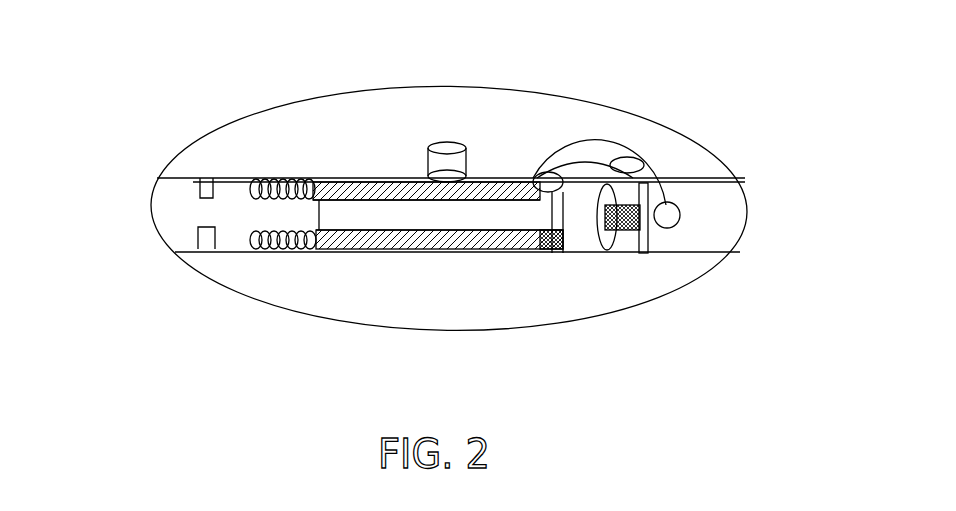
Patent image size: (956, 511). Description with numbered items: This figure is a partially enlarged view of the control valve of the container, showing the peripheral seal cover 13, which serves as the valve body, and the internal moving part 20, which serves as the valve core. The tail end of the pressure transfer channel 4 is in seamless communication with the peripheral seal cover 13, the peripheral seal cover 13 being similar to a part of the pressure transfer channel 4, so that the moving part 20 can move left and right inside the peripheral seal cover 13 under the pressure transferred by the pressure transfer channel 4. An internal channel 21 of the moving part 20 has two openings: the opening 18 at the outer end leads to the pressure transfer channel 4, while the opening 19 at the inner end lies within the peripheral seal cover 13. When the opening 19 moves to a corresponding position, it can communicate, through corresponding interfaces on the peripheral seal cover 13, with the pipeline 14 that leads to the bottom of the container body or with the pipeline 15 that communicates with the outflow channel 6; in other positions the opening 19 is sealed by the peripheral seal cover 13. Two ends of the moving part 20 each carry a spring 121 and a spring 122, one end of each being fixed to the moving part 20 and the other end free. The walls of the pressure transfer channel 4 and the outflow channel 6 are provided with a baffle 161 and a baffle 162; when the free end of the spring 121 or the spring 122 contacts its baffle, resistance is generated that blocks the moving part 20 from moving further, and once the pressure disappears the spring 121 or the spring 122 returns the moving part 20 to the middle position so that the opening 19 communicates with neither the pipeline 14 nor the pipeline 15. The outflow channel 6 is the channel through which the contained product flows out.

The pressure transfer channel 4 is at (405, 215).
The outflow channel 6 is at (739, 175).
The peripheral seal cover 13 is at (397, 119).
The pipeline 14 is at (419, 105).
The pipeline 15 is at (616, 156).
The opening 18 is at (439, 294).
The opening 19 is at (588, 294).
The moving part 20 is at (469, 107).
The internal channel 21 is at (439, 286).
The spring 121 is at (229, 204).
The spring 122 is at (665, 272).
The baffle 161 is at (144, 203).
The baffle 162 is at (721, 241).